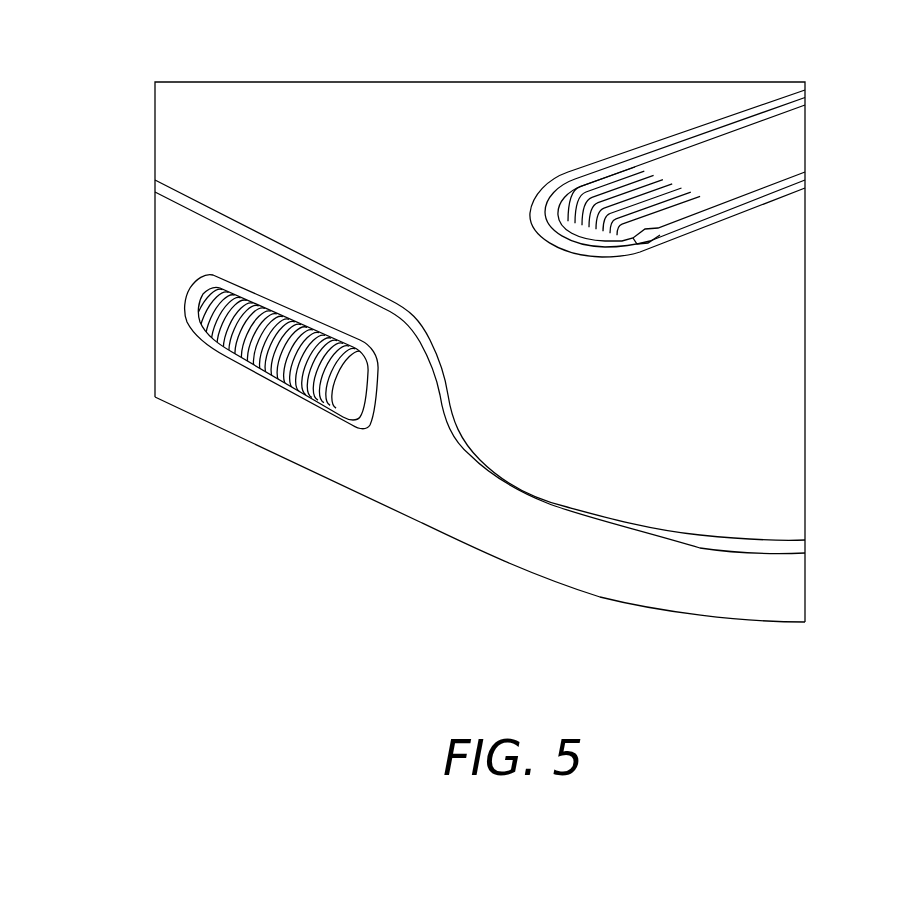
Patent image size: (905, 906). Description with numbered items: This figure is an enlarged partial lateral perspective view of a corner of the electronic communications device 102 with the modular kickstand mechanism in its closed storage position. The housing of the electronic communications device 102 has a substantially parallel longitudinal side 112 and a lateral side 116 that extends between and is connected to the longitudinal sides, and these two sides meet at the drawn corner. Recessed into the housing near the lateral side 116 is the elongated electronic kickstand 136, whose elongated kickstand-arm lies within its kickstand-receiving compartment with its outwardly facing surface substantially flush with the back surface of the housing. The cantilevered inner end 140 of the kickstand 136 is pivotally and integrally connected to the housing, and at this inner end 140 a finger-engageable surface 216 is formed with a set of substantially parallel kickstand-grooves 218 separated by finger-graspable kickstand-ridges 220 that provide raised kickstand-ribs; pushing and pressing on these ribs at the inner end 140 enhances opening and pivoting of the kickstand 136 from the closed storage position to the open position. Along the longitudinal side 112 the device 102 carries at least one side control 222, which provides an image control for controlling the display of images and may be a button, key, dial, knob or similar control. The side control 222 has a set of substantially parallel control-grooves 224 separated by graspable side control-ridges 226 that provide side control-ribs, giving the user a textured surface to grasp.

The electronic communications device 102 is at (570, 513).
The longitudinal side 112 is at (226, 355).
The lateral side 116 is at (797, 547).
The elongated electronic kickstand 136 is at (667, 164).
The cantilevered inner end 140 is at (623, 241).
The finger-engageable surface 216 is at (597, 177).
The kickstand-grooves 218 is at (620, 175).
The kickstand-ridges 220 is at (667, 207).
The side control 222 is at (218, 280).
The control-grooves 224 is at (235, 367).
The side control-ridges 226 is at (310, 365).